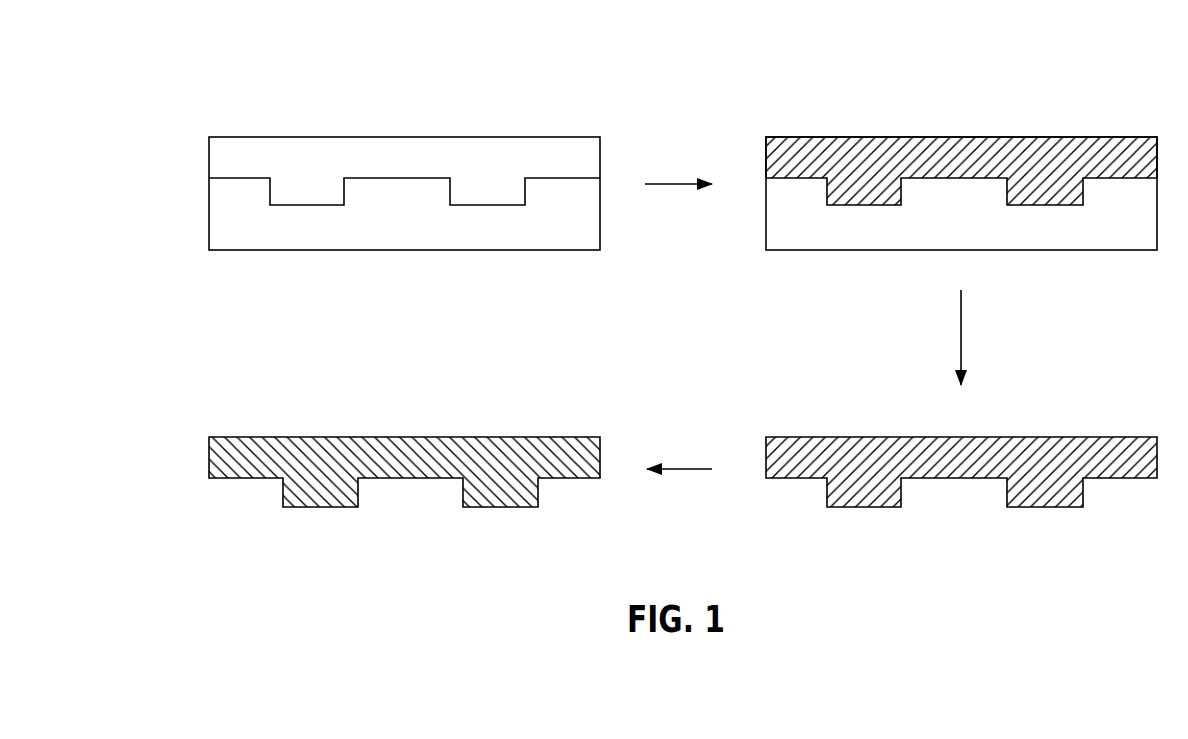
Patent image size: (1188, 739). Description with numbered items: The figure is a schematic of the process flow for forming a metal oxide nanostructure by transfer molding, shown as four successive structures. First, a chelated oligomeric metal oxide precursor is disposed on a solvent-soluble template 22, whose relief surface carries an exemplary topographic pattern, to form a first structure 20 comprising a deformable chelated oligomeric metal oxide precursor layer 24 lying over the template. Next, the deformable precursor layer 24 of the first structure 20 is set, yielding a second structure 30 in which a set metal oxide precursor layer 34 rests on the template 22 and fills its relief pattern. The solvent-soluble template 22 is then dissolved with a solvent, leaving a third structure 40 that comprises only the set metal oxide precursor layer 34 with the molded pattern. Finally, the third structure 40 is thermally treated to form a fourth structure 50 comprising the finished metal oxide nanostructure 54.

The first structure 20 is at (651, 183).
The solvent-soluble template 22 is at (407, 233).
The deformable chelated oligomeric metal oxide precursor layer 24 is at (440, 152).
The second structure 30 is at (926, 277).
The set metal oxide precursor layer 34 is at (1002, 152).
The third structure 40 is at (782, 418).
The fourth structure 50 is at (375, 422).
The metal oxide nanostructure 54 is at (408, 457).